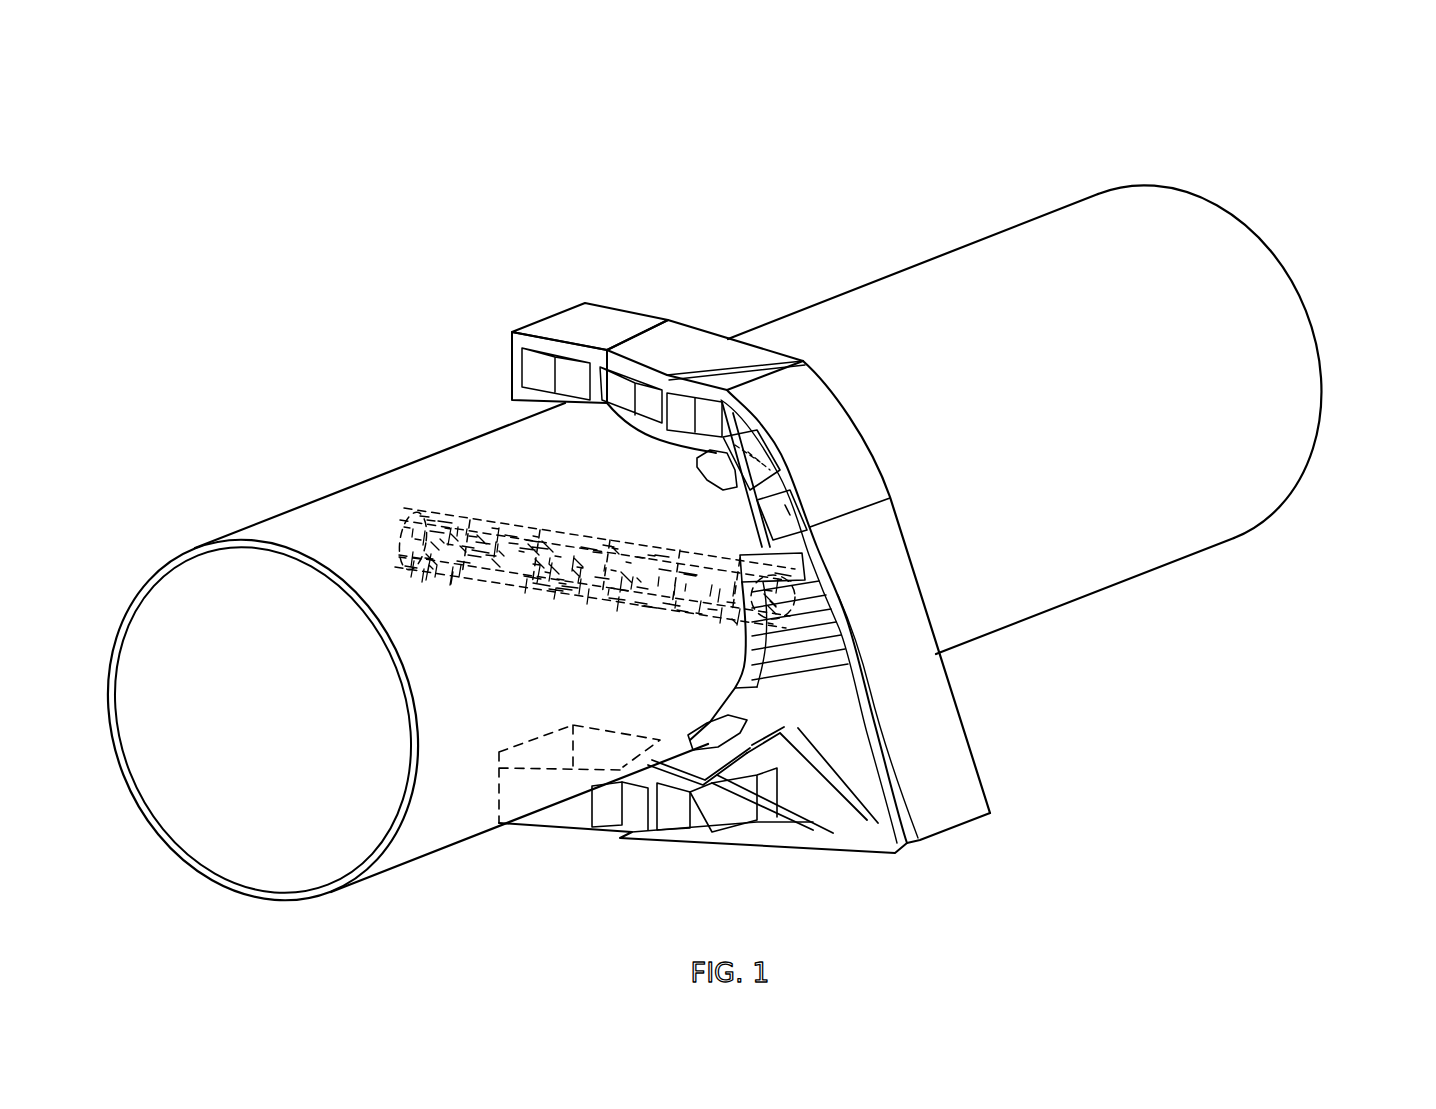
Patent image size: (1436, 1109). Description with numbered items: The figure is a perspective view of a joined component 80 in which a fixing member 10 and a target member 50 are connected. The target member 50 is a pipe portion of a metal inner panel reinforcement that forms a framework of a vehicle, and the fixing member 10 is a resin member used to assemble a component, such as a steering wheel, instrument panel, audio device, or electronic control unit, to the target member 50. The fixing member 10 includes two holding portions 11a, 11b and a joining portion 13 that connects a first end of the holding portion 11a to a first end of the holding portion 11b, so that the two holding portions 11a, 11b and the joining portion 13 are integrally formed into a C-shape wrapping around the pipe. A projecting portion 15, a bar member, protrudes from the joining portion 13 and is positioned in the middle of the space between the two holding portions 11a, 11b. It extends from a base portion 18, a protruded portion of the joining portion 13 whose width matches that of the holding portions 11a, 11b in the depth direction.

The fixing member 10 is at (766, 567).
The holding portion 11a is at (607, 322).
The holding portion 11b is at (600, 838).
The joining portion 13 is at (888, 563).
The projecting portion 15 is at (465, 505).
The base portion 18 is at (740, 545).
The target member 50 is at (1269, 299).
The joined component 80 is at (1184, 138).